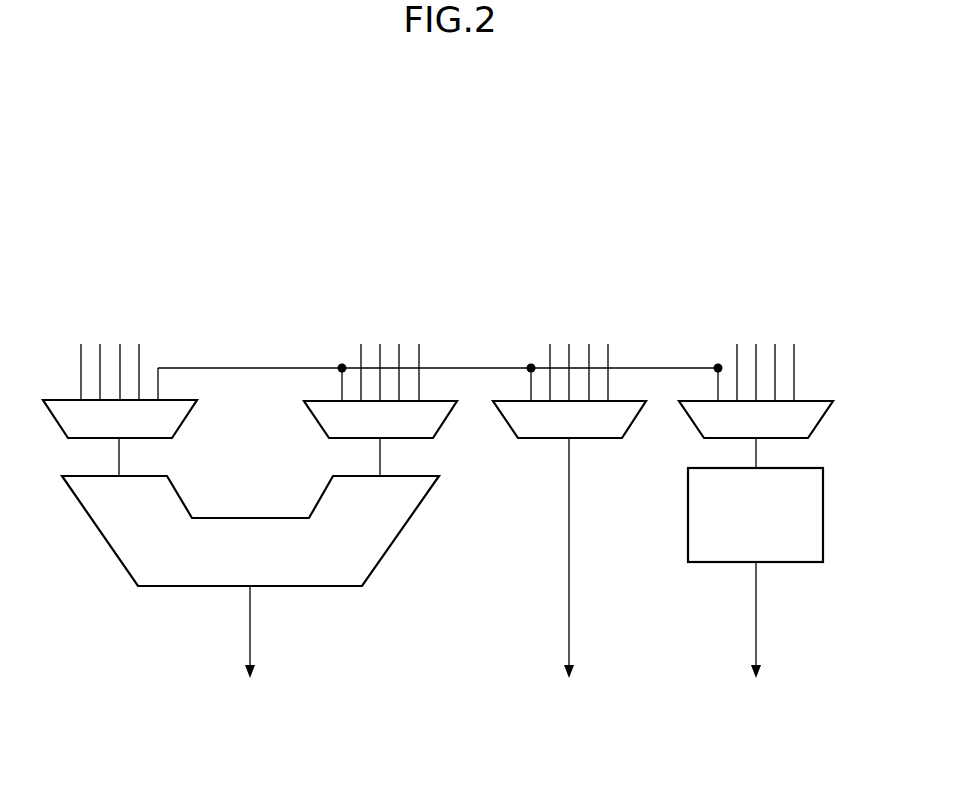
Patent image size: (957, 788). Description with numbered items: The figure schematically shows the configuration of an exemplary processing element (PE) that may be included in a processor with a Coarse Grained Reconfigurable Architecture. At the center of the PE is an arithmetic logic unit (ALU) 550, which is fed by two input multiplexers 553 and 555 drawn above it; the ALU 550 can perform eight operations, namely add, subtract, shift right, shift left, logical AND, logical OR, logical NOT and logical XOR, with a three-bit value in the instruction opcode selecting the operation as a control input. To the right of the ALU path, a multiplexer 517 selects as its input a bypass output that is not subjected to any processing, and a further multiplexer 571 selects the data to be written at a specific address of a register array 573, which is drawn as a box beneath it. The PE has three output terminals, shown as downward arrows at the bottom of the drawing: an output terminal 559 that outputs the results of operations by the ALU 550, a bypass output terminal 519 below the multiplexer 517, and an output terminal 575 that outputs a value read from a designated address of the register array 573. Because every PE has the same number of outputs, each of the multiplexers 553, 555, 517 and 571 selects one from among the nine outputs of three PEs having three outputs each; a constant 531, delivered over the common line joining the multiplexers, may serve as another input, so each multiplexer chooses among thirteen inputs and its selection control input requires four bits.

The constant 531 is at (250, 368).
The input multiplexer 553 is at (120, 410).
The input multiplexer 555 is at (380, 410).
The multiplexer 517 is at (569, 391).
The multiplexer 571 is at (756, 406).
The register array 573 is at (755, 515).
The arithmetic logic unit 550 is at (250, 531).
The output terminal 559 is at (250, 644).
The bypass output terminal 519 is at (569, 570).
The output terminal 575 is at (756, 632).